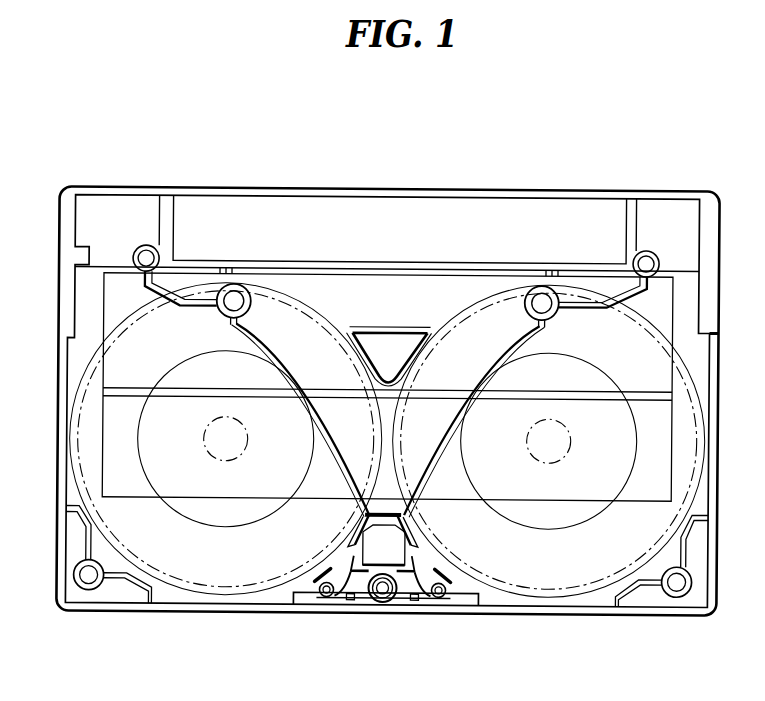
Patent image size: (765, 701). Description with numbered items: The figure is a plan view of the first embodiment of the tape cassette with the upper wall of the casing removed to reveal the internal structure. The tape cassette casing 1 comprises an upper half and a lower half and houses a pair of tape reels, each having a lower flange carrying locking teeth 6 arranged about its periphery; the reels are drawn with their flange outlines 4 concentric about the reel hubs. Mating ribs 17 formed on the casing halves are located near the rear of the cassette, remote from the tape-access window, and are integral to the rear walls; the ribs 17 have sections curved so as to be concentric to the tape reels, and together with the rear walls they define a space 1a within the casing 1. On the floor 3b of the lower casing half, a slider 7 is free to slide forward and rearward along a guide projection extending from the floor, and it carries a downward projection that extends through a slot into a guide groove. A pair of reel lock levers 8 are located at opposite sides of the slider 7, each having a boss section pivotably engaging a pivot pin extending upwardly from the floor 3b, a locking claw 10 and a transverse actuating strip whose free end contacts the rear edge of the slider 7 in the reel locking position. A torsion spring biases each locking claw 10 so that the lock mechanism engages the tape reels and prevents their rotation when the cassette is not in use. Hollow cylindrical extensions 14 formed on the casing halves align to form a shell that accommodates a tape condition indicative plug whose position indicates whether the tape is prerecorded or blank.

The tape cassette casing 1 is at (560, 182).
The space 1a is at (429, 601).
The floor 3b is at (466, 596).
The tape reel 4 is at (657, 415).
The locking teeth 6 is at (699, 444).
The slider 7 is at (391, 548).
The reel lock lever 8 is at (358, 591).
The locking claw 10 is at (358, 562).
The hollow cylindrical extension 14 is at (384, 602).
The mating rib 17 is at (455, 580).